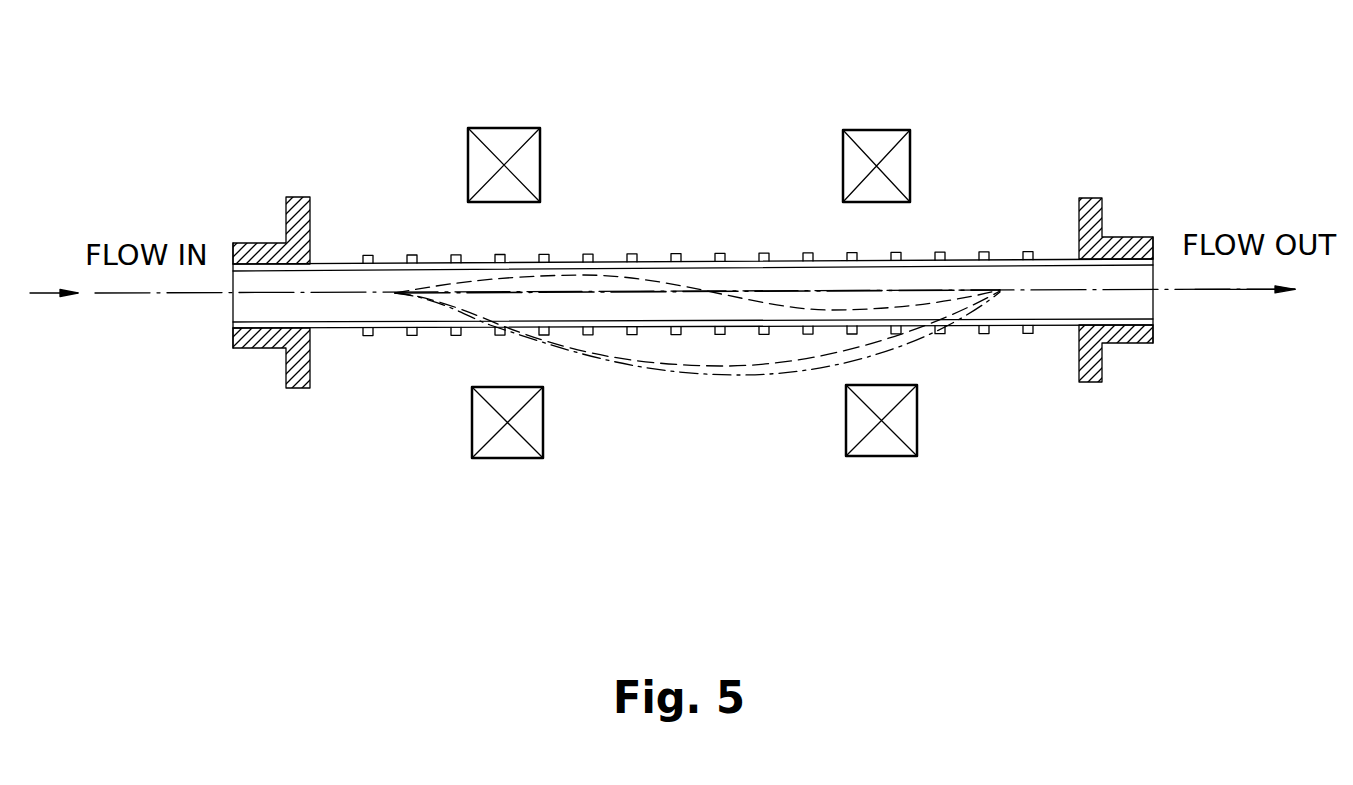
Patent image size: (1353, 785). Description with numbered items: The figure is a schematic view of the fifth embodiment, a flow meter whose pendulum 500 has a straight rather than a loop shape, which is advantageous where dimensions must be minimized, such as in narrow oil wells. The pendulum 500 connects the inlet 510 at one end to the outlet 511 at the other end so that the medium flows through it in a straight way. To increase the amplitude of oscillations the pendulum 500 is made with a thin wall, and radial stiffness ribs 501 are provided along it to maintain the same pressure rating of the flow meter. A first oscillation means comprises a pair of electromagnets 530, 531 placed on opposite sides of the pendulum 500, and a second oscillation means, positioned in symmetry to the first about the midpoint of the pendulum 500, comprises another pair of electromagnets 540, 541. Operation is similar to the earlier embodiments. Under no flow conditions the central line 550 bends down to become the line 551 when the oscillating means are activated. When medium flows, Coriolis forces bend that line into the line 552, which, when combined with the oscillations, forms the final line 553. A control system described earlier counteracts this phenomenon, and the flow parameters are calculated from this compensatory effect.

The pendulum 500 is at (1007, 329).
The radial stiffness ribs 501 is at (1028, 251).
The inlet 510 is at (297, 202).
The outlet 511 is at (1087, 198).
The electromagnet 530 is at (500, 138).
The electromagnet 531 is at (518, 458).
The electromagnet 540 is at (863, 135).
The electromagnet 541 is at (900, 445).
The central line 550 is at (782, 291).
The line 551 is at (648, 362).
The line 552 is at (643, 279).
The final line 553 is at (786, 367).